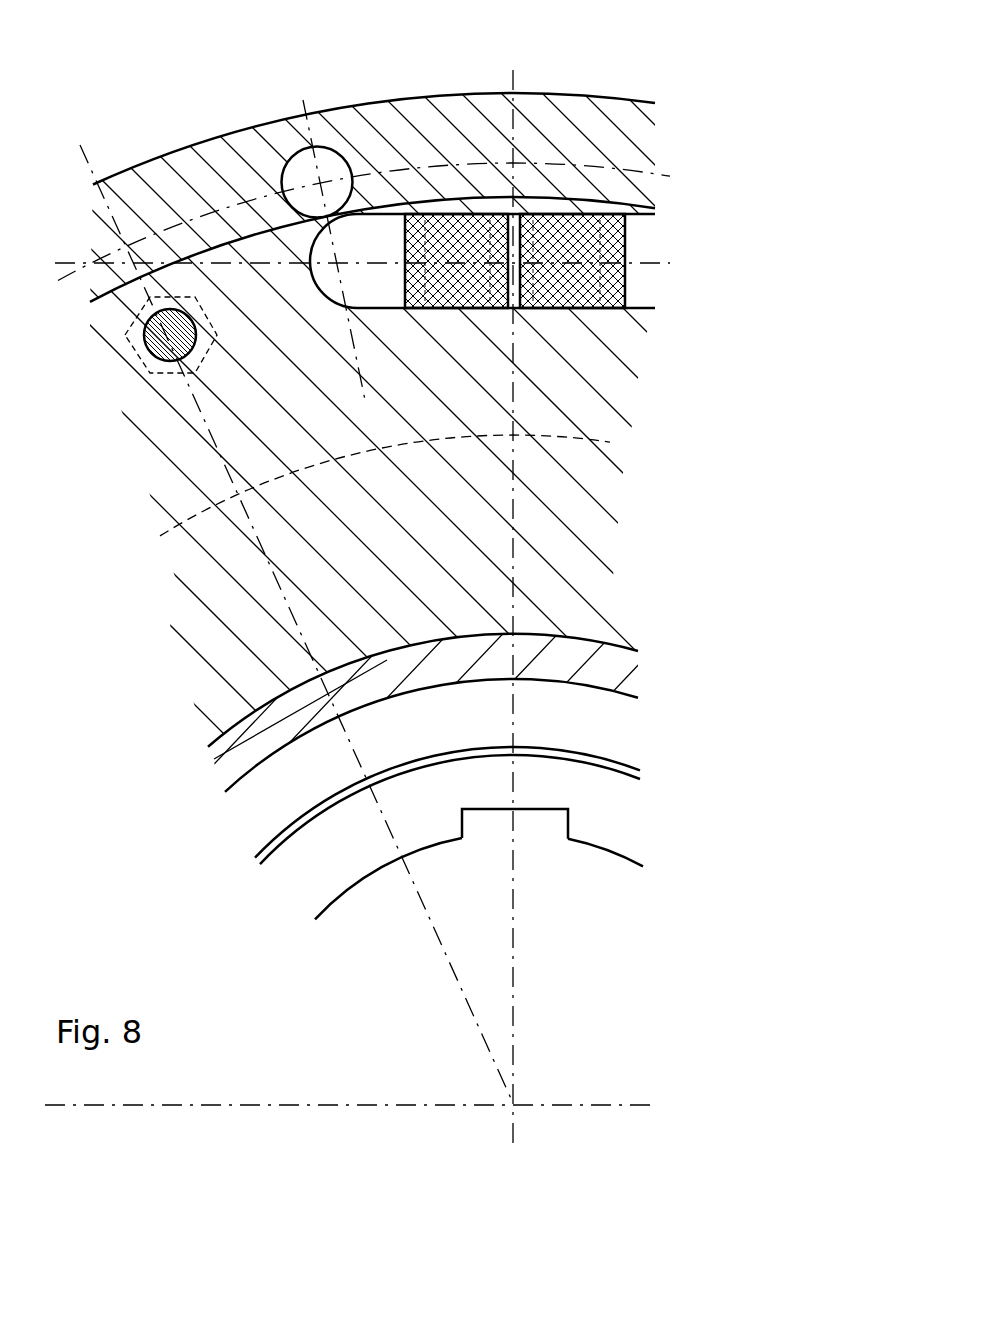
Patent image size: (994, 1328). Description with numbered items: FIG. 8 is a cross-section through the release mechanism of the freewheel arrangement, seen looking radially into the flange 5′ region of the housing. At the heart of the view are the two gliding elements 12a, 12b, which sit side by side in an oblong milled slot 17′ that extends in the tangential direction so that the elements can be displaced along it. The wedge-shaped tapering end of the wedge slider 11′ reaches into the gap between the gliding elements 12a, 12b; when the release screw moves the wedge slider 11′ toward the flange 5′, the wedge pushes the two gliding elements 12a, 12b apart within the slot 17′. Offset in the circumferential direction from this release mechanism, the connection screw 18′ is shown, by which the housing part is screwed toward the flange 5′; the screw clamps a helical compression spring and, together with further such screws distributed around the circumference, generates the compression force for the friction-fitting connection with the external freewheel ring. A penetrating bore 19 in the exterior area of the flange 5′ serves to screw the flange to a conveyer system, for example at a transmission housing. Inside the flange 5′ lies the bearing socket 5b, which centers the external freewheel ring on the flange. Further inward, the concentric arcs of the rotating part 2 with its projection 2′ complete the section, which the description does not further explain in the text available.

The rotor 2 is at (343, 877).
The rotor projection 2′ is at (548, 815).
The flange 5′ is at (562, 122).
The bearing socket 5b is at (627, 681).
The wedge slider 11′ is at (607, 309).
The gliding element 12a is at (627, 308).
The gliding element 12b is at (443, 212).
The oblong milled slot 17′ is at (367, 292).
The connection screw 18′ is at (196, 317).
The penetrating bore 19 is at (323, 215).